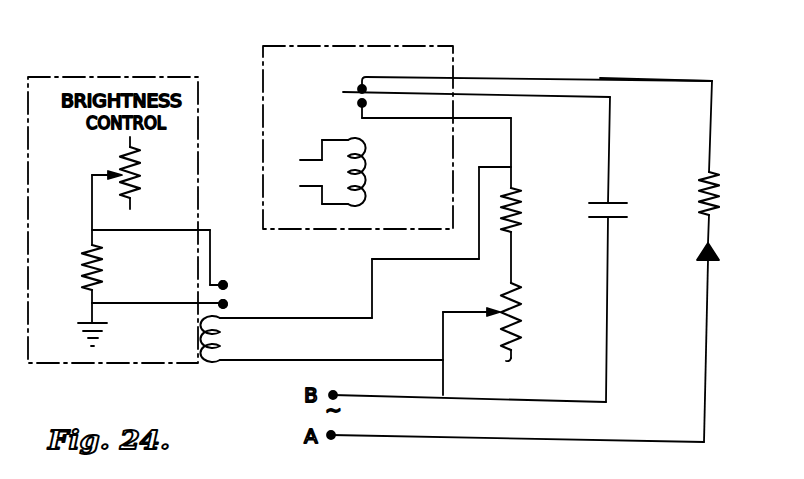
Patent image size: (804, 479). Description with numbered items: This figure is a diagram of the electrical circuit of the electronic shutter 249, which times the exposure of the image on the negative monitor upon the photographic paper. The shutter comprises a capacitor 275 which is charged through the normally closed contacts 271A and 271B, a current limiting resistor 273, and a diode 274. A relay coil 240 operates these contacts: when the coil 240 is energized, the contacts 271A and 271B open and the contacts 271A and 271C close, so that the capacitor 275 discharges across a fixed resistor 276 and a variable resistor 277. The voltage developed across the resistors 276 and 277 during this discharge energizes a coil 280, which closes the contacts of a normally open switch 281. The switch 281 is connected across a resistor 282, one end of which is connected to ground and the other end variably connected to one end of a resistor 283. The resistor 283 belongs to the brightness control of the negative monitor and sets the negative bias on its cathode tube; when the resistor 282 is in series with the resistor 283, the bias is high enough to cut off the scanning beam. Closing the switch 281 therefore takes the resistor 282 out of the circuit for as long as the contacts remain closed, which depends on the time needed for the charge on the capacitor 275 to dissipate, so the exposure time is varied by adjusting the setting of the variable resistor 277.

The resistor 283 is at (142, 173).
The resistor 282 is at (103, 268).
The normally open switch 281 is at (231, 303).
The coil 280 is at (321, 339).
The relay coil 240 is at (362, 171).
The contacts 271A is at (393, 92).
The contacts 271B is at (362, 82).
The contacts 271C is at (358, 104).
The fixed resistor 276 is at (540, 225).
The variable resistor 277 is at (523, 338).
The capacitor 275 is at (648, 228).
The current limiting resistor 273 is at (722, 197).
The diode 274 is at (737, 262).
The electronic shutter 249 is at (643, 66).